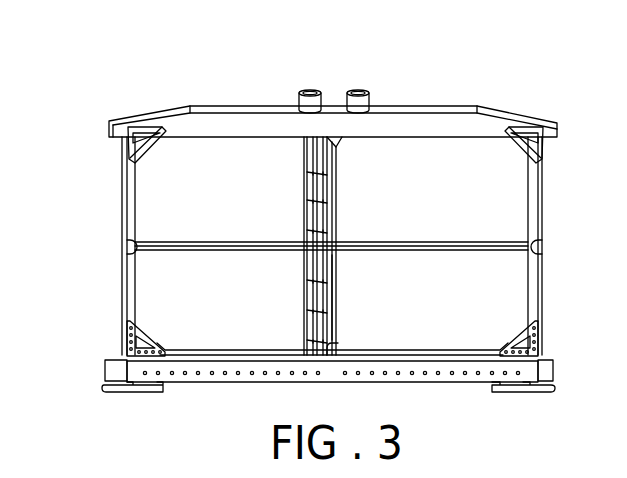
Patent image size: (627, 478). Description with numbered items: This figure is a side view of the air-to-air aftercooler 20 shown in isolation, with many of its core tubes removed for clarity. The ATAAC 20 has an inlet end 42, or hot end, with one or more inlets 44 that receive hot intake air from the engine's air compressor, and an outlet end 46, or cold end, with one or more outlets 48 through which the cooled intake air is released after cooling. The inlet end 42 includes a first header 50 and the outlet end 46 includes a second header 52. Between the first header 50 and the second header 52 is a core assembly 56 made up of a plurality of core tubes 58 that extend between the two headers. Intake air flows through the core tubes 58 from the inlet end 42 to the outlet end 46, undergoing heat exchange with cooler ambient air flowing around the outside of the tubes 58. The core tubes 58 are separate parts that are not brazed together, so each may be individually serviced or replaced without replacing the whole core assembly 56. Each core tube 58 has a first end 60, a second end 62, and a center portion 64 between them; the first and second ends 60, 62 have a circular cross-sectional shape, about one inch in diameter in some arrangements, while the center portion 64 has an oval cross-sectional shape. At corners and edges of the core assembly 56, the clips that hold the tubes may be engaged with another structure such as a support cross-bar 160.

The air-to-air aftercooler 20 is at (497, 48).
The inlet end 42 is at (95, 107).
The inlets 44 is at (310, 91).
The outlet end 46 is at (94, 366).
The outlets 48 is at (114, 356).
The first header 50 is at (515, 118).
The second header 52 is at (447, 381).
The core assembly 56 is at (299, 230).
The core tubes 58 is at (328, 226).
The first end 60 is at (345, 149).
The second end 62 is at (343, 348).
The center portion 64 is at (343, 262).
The support cross-bar 160 is at (468, 242).